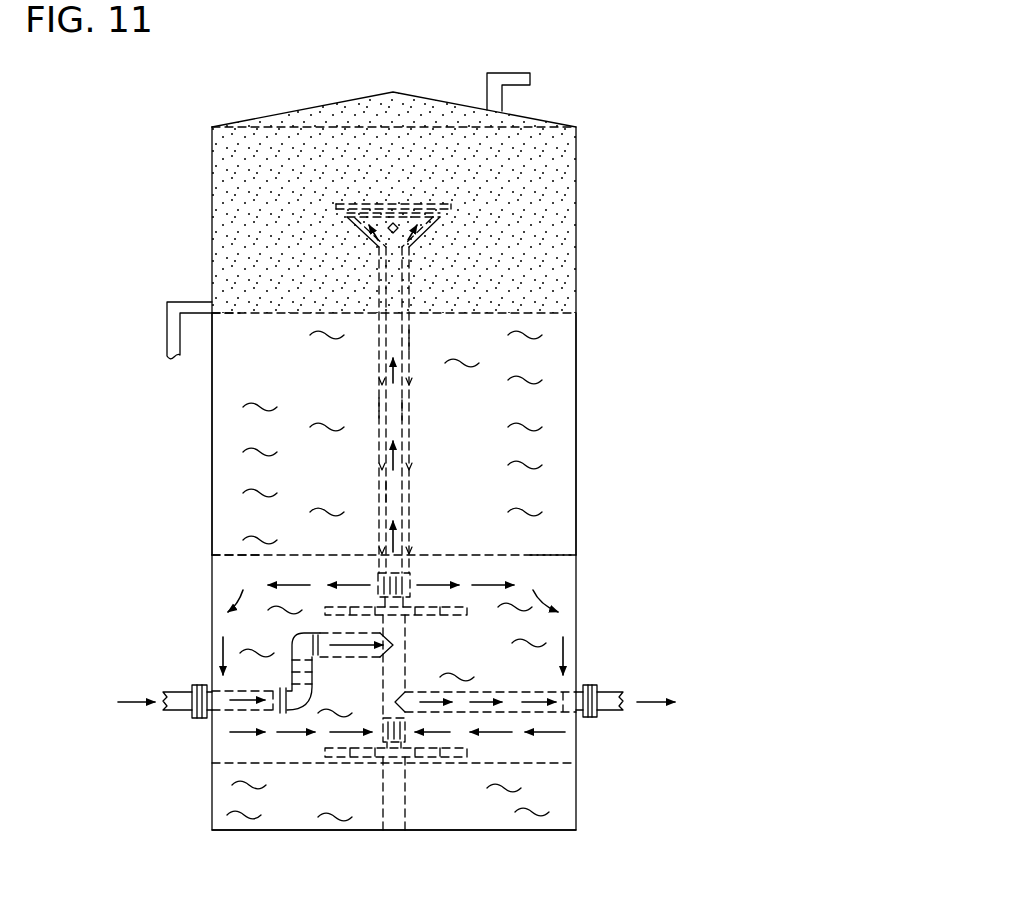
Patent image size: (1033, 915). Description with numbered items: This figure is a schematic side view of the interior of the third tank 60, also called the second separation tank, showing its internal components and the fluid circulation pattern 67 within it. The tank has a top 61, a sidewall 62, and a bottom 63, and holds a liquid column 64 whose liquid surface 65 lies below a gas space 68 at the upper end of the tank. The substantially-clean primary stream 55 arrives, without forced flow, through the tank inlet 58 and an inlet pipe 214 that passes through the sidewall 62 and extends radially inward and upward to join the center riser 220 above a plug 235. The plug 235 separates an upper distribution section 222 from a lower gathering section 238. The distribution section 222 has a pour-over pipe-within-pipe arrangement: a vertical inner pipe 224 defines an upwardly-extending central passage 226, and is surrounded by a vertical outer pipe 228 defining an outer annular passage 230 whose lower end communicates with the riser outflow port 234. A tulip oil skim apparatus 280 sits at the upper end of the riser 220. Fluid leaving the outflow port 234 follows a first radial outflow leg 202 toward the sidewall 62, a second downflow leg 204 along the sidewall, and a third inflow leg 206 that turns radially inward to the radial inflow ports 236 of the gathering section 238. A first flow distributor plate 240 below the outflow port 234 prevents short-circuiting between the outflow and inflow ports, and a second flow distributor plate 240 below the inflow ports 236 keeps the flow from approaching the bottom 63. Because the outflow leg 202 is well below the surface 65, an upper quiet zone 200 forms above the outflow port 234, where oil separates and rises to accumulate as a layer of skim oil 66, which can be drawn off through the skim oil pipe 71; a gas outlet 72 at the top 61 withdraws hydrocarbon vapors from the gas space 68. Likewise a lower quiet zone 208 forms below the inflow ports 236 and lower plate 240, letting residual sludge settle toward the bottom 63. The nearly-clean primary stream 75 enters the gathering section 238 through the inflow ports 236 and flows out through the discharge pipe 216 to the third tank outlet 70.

The substantially-clean primary stream 55 is at (128, 700).
The tank inlet 58 is at (205, 683).
The third tank 60 is at (610, 88).
The tank top 61 is at (352, 100).
The sidewall 62 is at (212, 433).
The tank bottom 63 is at (455, 832).
The liquid column 64 is at (335, 478).
The liquid surface 65 is at (543, 313).
The skim oil 66 is at (245, 305).
The fluid circulation pattern 67 is at (245, 585).
The gas space 68 is at (513, 188).
The third tank outlet 70 is at (583, 685).
The skim oil pipe 71 is at (167, 328).
The gas outlet 72 is at (508, 73).
The nearly-clean primary stream 75 is at (645, 700).
The upper quiet zone 200 is at (548, 395).
The first radial outflow leg 202 is at (512, 578).
The second downflow leg 204 is at (568, 643).
The third inflow leg 206 is at (270, 740).
The lower quiet zone 208 is at (290, 787).
The inlet pipe 214 is at (243, 712).
The discharge pipe 216 is at (545, 710).
The center riser 220 is at (415, 458).
The distribution section 222 is at (333, 377).
The vertical inner pipe 224 is at (386, 492).
The central passage 226 is at (395, 412).
The vertical outer pipe 228 is at (379, 407).
The outer annular passage 230 is at (405, 342).
The riser outflow port 234 is at (417, 578).
The plug 235 is at (392, 667).
The radial inflow ports 236 is at (385, 735).
The gathering section 238 is at (497, 742).
The flow distributor plate 240 is at (440, 615).
The tulip oil skim apparatus 280 is at (335, 195).